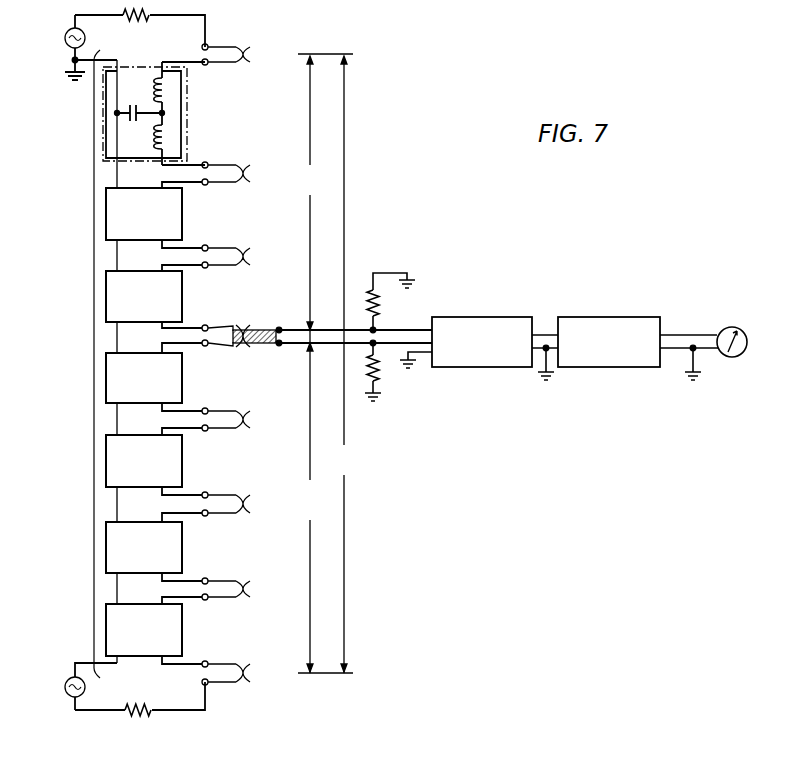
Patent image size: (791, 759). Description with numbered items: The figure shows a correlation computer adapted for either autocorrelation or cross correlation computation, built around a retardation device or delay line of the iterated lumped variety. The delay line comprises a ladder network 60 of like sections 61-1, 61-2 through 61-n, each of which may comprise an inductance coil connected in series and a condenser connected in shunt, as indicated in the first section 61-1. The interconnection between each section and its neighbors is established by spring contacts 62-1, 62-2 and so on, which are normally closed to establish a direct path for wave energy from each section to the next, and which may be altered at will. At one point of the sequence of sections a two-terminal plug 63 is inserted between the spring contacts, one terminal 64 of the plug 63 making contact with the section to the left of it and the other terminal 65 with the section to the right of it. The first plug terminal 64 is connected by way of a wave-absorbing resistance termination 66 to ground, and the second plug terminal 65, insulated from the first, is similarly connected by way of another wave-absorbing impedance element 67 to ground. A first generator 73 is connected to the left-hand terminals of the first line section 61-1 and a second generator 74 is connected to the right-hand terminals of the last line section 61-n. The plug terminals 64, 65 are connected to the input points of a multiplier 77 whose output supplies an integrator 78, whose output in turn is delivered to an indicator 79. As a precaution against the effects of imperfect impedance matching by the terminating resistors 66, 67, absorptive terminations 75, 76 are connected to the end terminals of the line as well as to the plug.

The ladder network 60 is at (100, 365).
The first line section 61-1 is at (182, 97).
The second line section 61-2 is at (182, 214).
The last line section 61-n is at (182, 626).
The spring contacts 62-1 is at (251, 53).
The spring contacts 62-2 is at (252, 172).
The two-terminal plug 63 is at (262, 348).
The first plug terminal 64 is at (270, 328).
The second plug terminal 65 is at (277, 347).
The wave-absorbing resistance termination 66 is at (386, 298).
The wave-absorbing impedance element 67 is at (381, 367).
The first generator 73 is at (64, 38).
The second generator 74 is at (66, 693).
The absorptive termination 75 is at (140, 21).
The absorptive termination 76 is at (139, 716).
The multiplier 77 is at (496, 317).
The integrator 78 is at (603, 317).
The indicator 79 is at (724, 328).